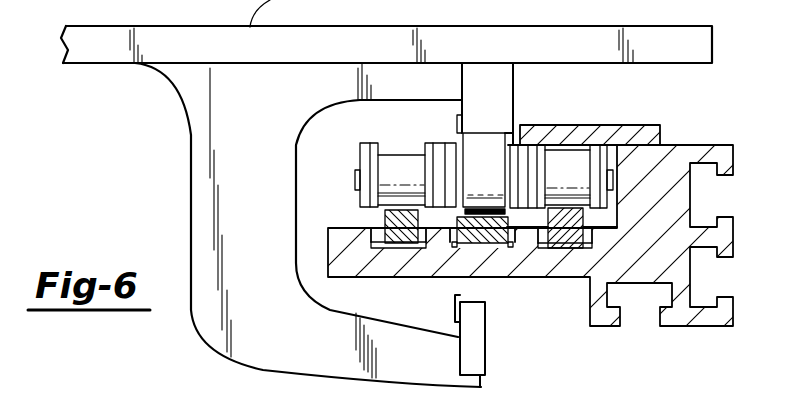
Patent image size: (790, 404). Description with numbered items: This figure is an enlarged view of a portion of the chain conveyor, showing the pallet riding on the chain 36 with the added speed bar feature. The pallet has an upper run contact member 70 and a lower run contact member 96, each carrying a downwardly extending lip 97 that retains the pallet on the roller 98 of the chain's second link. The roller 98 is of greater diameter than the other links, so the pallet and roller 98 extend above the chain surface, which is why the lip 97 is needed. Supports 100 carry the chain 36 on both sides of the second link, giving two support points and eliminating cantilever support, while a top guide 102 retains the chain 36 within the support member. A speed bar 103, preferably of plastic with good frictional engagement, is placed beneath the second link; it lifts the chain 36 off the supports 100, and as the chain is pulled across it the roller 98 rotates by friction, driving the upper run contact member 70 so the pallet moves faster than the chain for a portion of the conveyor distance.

The chain 36 is at (362, 150).
The upper run contact member 70 is at (499, 85).
The lip 97 is at (456, 124).
The roller 98 is at (488, 157).
The top guide 102 is at (611, 128).
The supports 100 is at (384, 218).
The speed bar 103 is at (456, 243).
The lower run contact member 96 is at (471, 358).